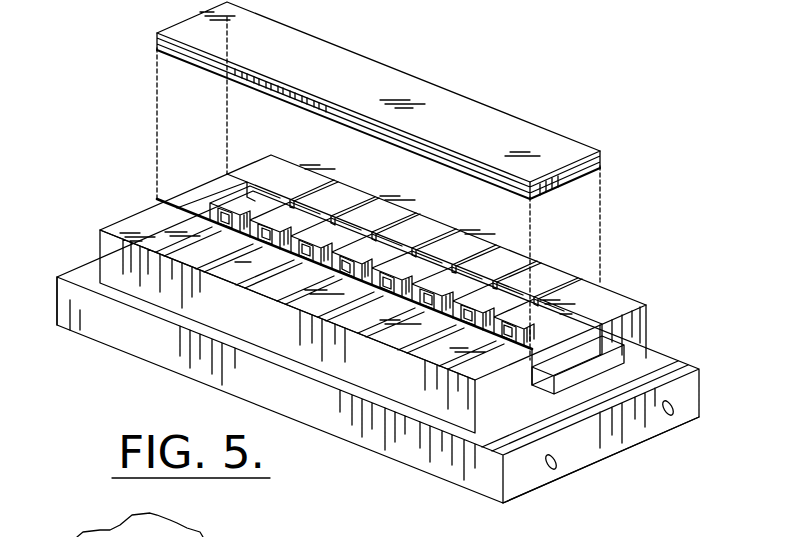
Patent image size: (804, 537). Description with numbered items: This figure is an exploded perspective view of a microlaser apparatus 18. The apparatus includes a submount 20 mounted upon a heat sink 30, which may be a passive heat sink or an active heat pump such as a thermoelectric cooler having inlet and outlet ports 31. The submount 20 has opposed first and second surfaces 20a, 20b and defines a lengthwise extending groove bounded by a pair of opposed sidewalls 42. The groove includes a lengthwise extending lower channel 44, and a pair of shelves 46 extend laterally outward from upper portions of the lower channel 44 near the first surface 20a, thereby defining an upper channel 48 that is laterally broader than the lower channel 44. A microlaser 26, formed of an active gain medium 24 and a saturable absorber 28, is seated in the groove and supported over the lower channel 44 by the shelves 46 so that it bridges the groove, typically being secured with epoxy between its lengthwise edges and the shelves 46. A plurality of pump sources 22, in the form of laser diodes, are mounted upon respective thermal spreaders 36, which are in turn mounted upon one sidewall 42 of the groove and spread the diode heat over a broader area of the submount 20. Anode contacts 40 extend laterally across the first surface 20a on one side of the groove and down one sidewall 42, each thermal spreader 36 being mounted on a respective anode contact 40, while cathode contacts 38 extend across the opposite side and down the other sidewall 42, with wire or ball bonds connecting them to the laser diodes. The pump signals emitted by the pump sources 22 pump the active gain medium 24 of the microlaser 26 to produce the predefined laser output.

The microlaser apparatus 18 is at (140, 92).
The submount 20 is at (262, 330).
The first surface 20a is at (115, 223).
The second surface 20b is at (78, 330).
The pump sources 22 is at (452, 287).
The active gain medium 24 is at (601, 160).
The microlaser 26 is at (445, 100).
The saturable absorber 28 is at (597, 153).
The heat sink 30 is at (667, 365).
The inlet and outlet ports 31 is at (553, 470).
The thermal spreaders 36 is at (390, 267).
The cathode contacts 38 is at (177, 232).
The anode contacts 40 is at (300, 177).
The sidewalls 42 is at (565, 393).
The lower channel 44 is at (570, 385).
The shelves 46 is at (536, 372).
The upper channel 48 is at (193, 195).